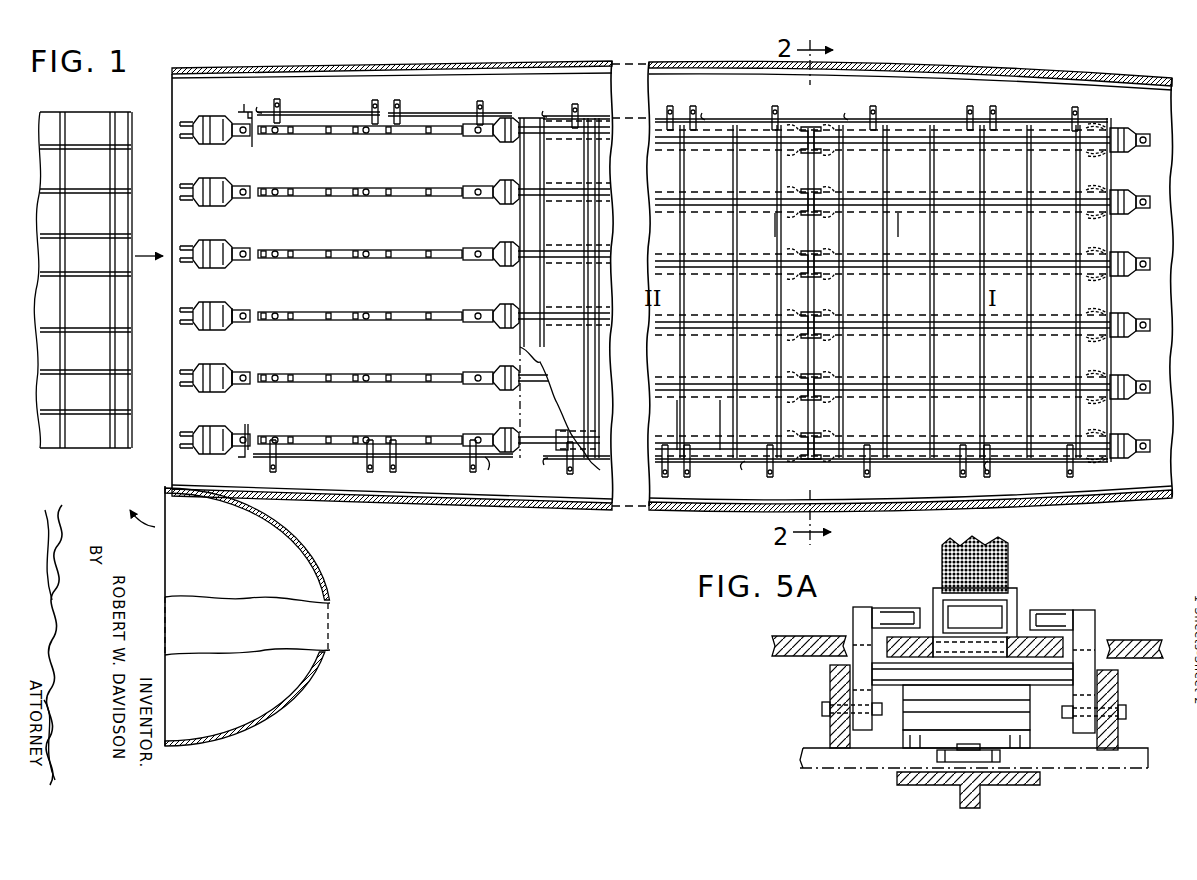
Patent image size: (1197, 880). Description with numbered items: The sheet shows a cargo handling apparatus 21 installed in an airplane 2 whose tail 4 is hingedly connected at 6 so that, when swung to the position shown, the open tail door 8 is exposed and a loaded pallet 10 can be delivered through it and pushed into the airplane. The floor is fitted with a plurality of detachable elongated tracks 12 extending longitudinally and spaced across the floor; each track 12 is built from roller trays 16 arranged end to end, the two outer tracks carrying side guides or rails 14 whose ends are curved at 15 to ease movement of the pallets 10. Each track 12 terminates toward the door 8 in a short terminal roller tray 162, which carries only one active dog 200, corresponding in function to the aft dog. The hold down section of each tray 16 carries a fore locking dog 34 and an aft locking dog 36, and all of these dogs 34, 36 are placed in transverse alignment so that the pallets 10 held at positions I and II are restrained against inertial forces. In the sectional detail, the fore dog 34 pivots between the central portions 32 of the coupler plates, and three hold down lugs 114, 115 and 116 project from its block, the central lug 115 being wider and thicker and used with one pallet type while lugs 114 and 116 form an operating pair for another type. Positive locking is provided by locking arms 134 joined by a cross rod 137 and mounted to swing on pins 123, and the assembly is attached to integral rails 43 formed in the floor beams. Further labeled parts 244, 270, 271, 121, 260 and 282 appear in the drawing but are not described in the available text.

In FIG. 1, the airplane 2 is at (456, 518).
In FIG. 1, the tail 4 is at (297, 540).
In FIG. 1, the hinge connection 6 is at (165, 487).
In FIG. 1, the tail door 8 is at (172, 340).
In FIG. 1, the loaded pallet 10 is at (137, 186).
In FIG. 5A, the loaded pallet 10 is at (771, 630).
In FIG. 1, the elongated track 12 is at (340, 333).
In FIG. 1, the side guide or rail 14 is at (312, 112).
In FIG. 1, the curved end 15 is at (268, 100).
In FIG. 1, the roller tray 16 is at (418, 137).
In FIG. 1, the cargo handling apparatus 21 is at (600, 468).
In FIG. 1, the locking dog 34 is at (505, 121).
In FIG. 1, the locking dog 36 is at (528, 128).
In FIG. 1, the terminal roller tray 162 is at (215, 120).
In FIG. 1, the active dog 200 is at (230, 309).
In FIG. 1, the hook 244 is at (243, 103).
In FIG. 1, the post 270 is at (1010, 136).
In FIG. 5A, the post 270 is at (1008, 556).
In FIG. 1, the column 271 is at (1030, 137).
In FIG. 5A, the hold down lug 116 is at (882, 620).
In FIG. 5A, the hold down lug 114 is at (1052, 620).
In FIG. 5A, the central lug 115 is at (1008, 618).
In FIG. 5A, the bracket plate 121 is at (855, 658).
In FIG. 5A, the pin 123 is at (822, 708).
In FIG. 5A, the central portion 32 is at (830, 725).
In FIG. 5A, the locking arm 134 is at (877, 727).
In FIG. 5A, the integral rail 43 is at (938, 764).
In FIG. 5A, the cross rod 137 is at (1003, 680).
In FIG. 5A, the bracket 260 is at (928, 607).
In FIG. 5A, the insert 282 is at (1015, 590).